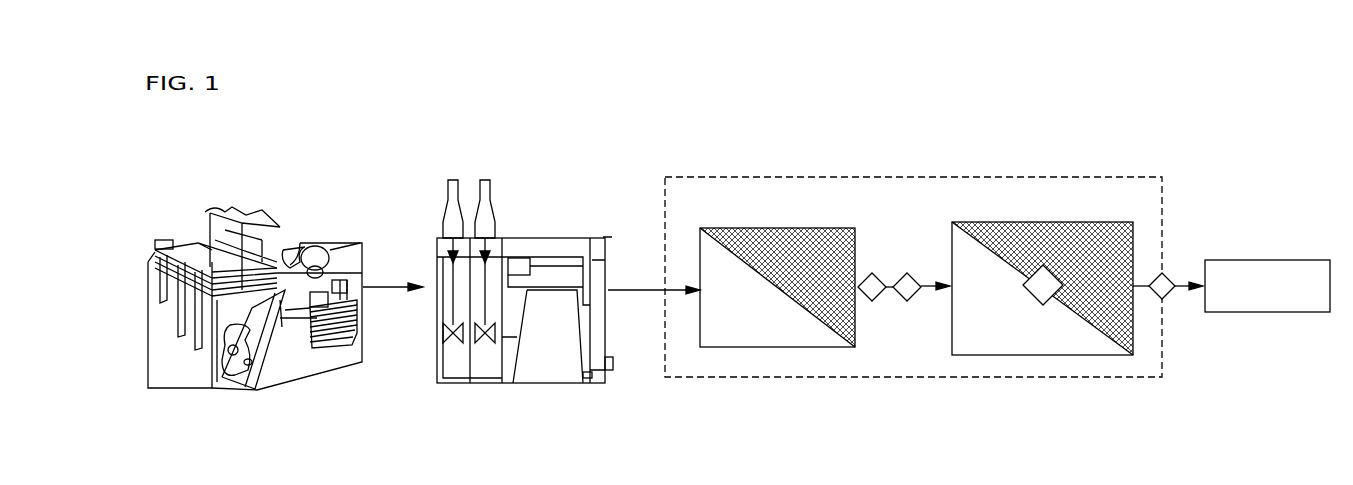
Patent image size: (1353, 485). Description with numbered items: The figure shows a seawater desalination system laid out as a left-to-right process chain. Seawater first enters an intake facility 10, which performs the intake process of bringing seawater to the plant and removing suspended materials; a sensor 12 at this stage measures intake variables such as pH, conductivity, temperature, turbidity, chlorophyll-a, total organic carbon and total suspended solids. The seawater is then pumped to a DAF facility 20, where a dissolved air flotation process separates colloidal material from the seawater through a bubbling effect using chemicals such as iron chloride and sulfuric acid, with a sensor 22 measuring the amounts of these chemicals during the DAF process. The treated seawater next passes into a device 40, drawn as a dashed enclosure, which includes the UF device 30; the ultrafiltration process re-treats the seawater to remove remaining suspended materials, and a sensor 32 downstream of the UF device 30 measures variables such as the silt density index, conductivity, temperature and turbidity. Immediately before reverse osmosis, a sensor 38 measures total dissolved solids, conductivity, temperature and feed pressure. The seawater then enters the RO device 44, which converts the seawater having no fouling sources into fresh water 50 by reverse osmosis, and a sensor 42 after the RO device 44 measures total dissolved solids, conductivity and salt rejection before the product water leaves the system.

The intake facility 10 is at (255, 304).
The sensor 12 is at (318, 317).
The DAF facility 20 is at (483, 180).
The sensor 22 is at (522, 258).
The UF device 30 is at (762, 237).
The sensor 32 is at (865, 280).
The sensor 38 is at (900, 280).
The device 40 is at (1030, 176).
The sensor 42 is at (1170, 277).
The RO device 44 is at (1058, 226).
The fresh water 50 is at (1268, 258).